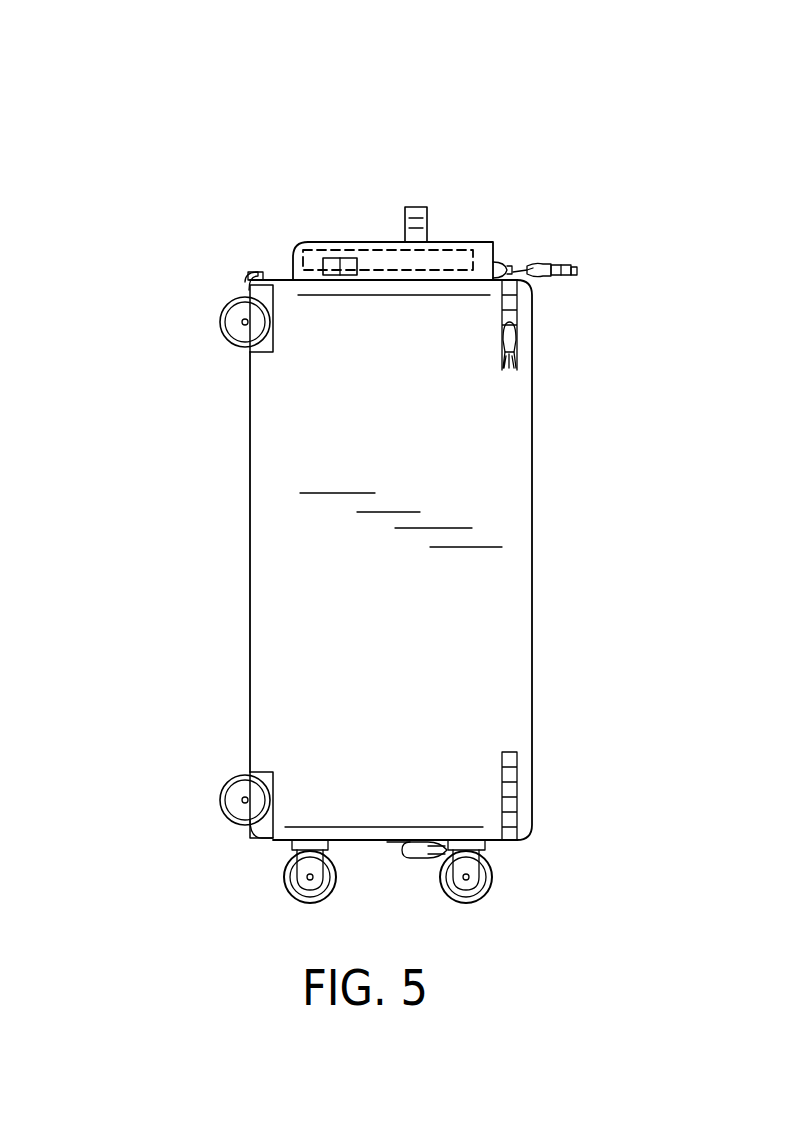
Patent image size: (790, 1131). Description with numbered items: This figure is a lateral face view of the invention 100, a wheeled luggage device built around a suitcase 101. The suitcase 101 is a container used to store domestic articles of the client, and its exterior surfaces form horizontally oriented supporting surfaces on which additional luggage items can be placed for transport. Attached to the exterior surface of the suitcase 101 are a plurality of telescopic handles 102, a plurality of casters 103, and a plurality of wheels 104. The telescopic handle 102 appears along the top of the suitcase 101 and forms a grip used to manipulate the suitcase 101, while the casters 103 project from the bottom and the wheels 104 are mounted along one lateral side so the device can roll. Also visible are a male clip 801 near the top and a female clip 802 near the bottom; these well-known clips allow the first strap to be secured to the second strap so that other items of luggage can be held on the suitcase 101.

The invention 100 is at (100, 138).
The suitcase 101 is at (498, 465).
The telescopic handle 102 is at (445, 245).
The caster 103 is at (465, 898).
The wheel 104 is at (228, 782).
The male clip 801 is at (567, 268).
The female clip 802 is at (430, 850).